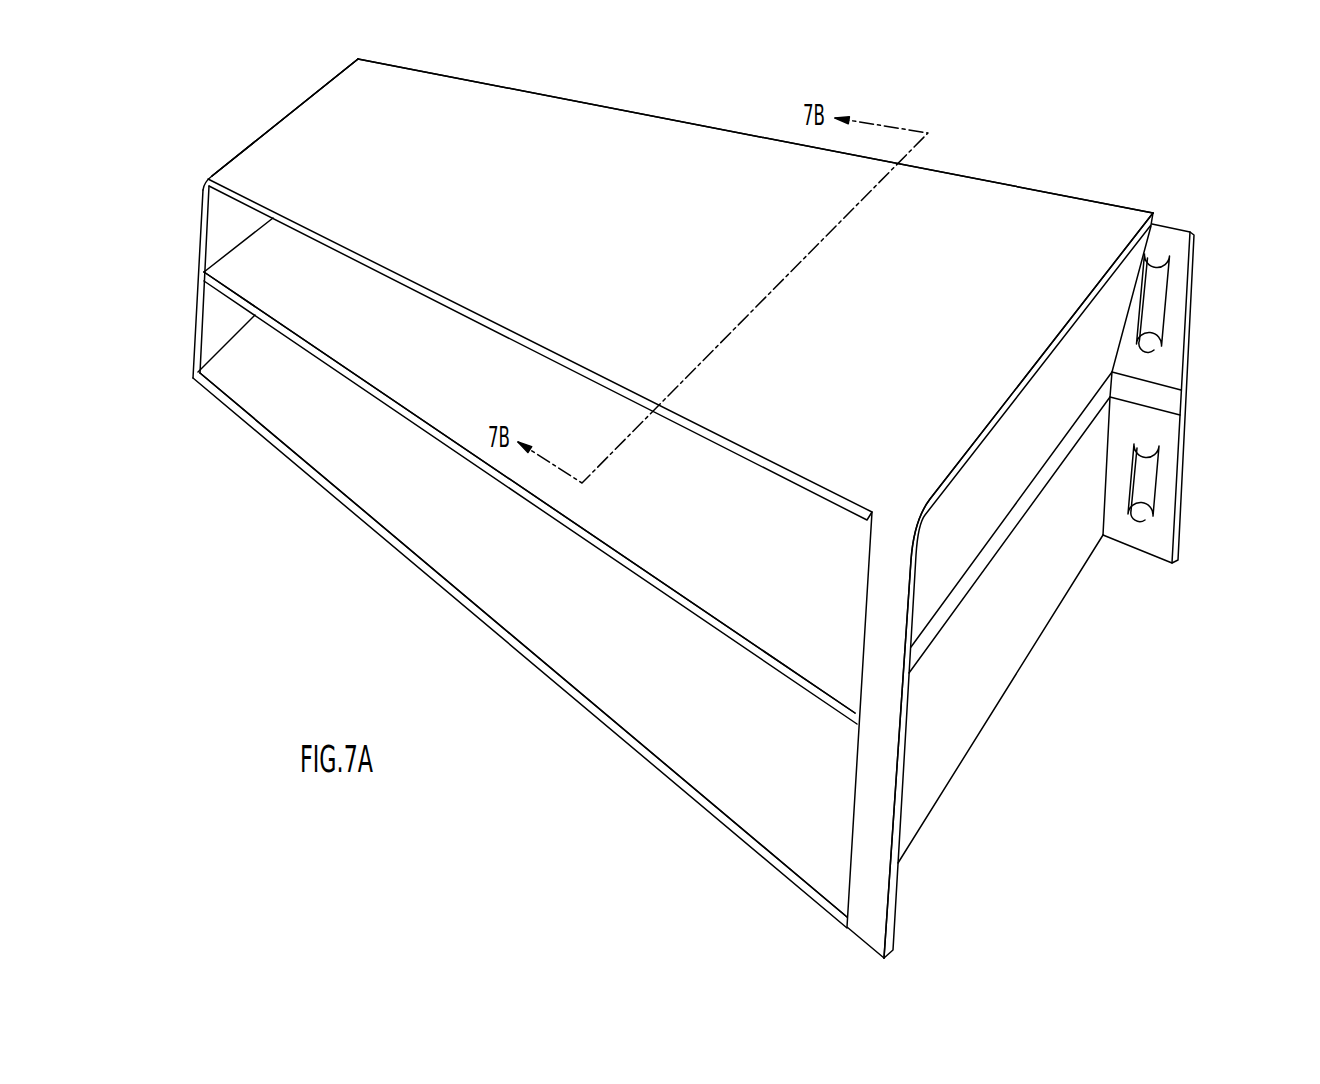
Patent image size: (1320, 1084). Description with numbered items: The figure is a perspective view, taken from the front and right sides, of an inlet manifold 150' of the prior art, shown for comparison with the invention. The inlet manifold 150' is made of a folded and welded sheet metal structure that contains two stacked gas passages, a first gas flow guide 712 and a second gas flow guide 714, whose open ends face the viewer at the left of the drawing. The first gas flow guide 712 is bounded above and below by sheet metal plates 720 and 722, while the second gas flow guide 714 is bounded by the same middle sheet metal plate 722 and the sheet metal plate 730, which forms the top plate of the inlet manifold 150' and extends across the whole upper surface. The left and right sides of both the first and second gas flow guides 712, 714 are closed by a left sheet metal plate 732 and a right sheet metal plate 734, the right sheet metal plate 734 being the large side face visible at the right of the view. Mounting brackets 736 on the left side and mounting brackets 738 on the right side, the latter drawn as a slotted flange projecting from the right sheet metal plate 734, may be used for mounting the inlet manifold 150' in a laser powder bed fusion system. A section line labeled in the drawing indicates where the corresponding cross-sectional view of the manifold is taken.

The inlet manifold 150' is at (755, 126).
The sheet metal plate 730 is at (613, 230).
The left sheet metal plate 732 is at (268, 130).
The mounting brackets 736 is at (337, 90).
The sheet metal plate 722 is at (238, 270).
The sheet metal plate 720 is at (227, 373).
The second gas flow guide 714 is at (442, 392).
The first gas flow guide 712 is at (453, 538).
The right sheet metal plate 734 is at (1030, 628).
The mounting brackets 738 is at (1188, 298).